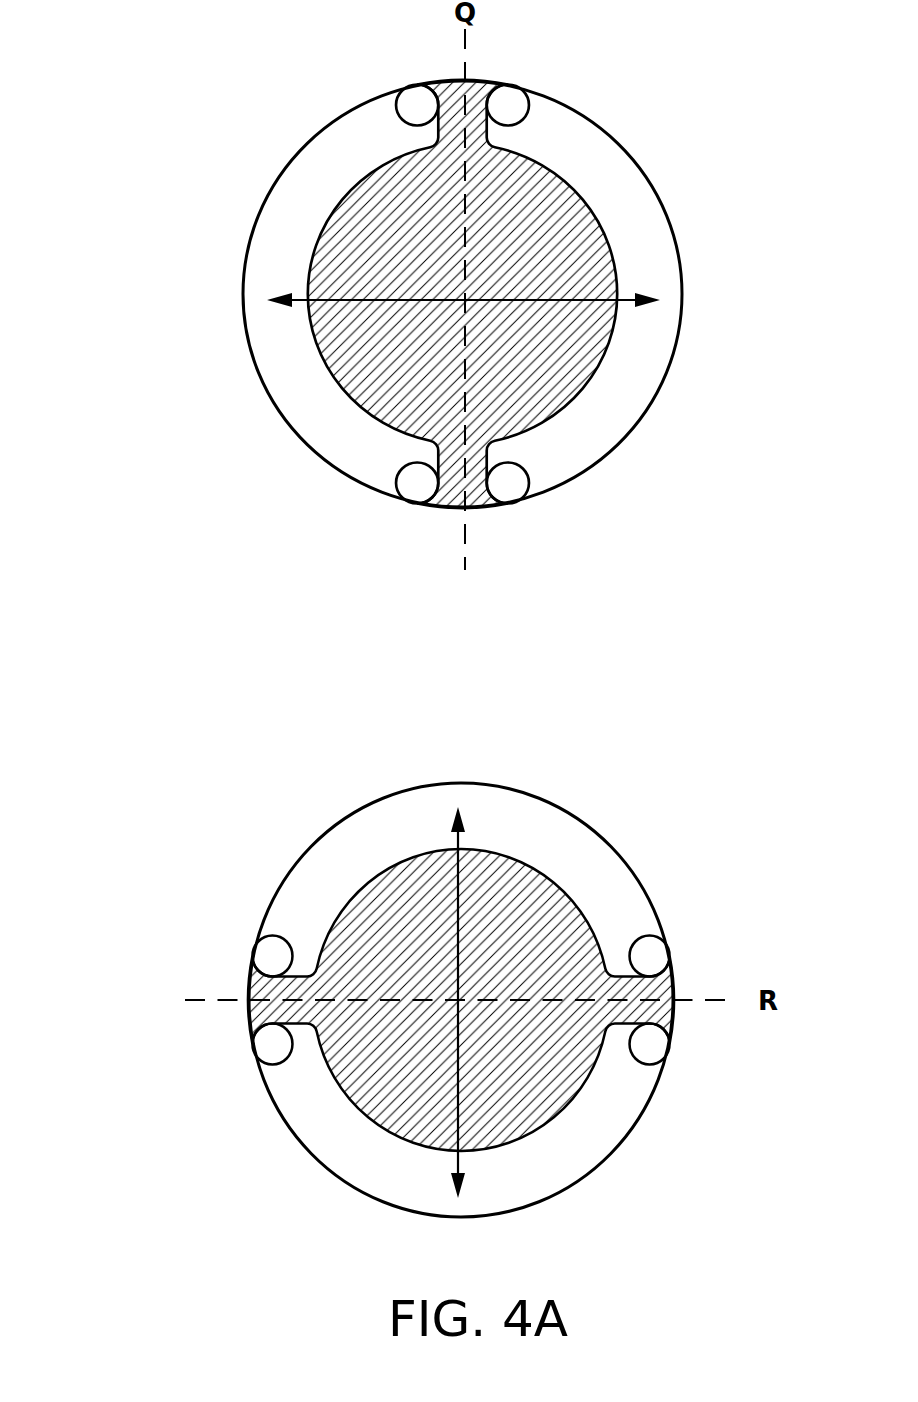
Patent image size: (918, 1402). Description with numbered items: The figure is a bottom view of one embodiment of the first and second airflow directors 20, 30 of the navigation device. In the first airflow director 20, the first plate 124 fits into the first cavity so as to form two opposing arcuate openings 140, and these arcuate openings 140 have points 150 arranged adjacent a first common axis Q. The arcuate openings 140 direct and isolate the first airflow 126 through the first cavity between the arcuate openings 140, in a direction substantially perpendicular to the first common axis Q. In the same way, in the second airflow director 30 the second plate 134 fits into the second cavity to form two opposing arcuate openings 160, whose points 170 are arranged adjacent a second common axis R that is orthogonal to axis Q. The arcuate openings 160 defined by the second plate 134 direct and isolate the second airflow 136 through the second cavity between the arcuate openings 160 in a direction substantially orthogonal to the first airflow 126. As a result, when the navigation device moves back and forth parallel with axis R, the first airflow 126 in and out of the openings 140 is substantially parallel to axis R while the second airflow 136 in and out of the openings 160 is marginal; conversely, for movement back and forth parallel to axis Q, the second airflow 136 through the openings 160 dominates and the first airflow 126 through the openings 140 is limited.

The first airflow director 20 is at (213, 57).
The second airflow director 30 is at (153, 747).
The first plate 124 is at (533, 197).
The first airflow 126 is at (622, 292).
The second plate 134 is at (495, 1097).
The second airflow 136 is at (452, 836).
The arcuate openings 140 is at (303, 232).
The points 150 is at (438, 116).
The arcuate openings 160 is at (587, 880).
The points 170 is at (292, 977).